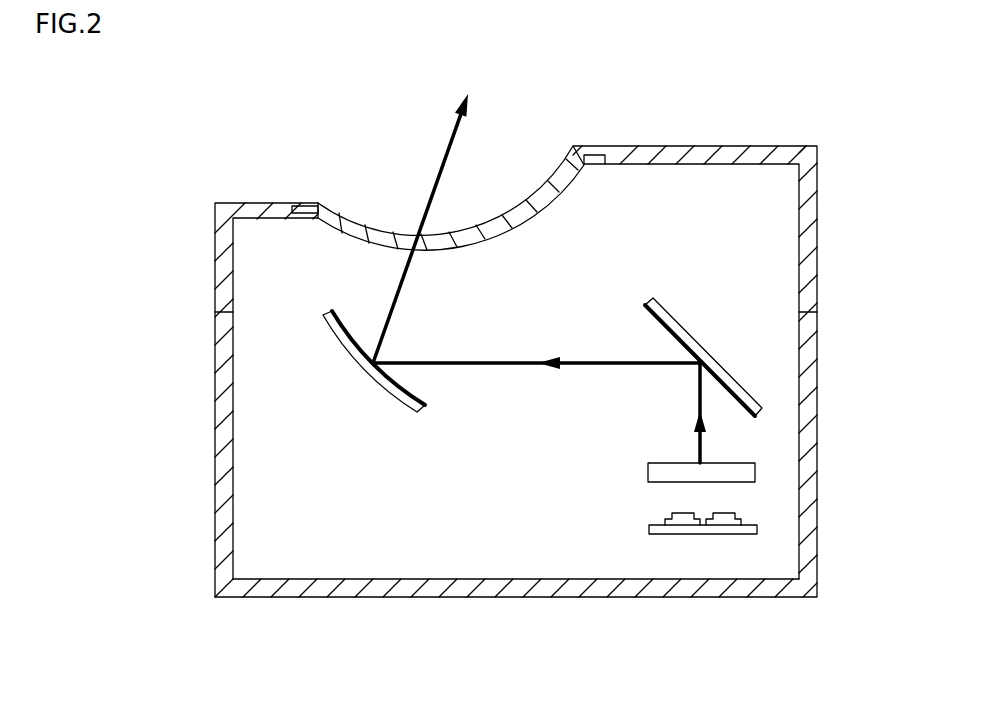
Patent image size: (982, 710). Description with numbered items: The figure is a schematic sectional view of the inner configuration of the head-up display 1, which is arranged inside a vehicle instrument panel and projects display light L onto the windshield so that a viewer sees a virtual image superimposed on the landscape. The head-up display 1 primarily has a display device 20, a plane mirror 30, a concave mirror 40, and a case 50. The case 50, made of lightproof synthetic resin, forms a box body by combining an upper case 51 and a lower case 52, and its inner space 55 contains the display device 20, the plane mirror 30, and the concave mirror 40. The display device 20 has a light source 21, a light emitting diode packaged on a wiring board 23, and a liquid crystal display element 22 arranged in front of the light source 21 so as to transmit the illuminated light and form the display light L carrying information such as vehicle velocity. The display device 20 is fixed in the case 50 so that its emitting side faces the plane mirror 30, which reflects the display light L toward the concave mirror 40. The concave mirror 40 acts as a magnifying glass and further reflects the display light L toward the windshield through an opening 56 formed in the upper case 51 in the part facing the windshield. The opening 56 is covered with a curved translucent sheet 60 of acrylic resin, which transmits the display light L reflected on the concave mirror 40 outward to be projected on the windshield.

The head-up display 1 is at (262, 123).
The display device 20 is at (627, 509).
The light source 21 is at (737, 515).
The liquid crystal display element 22 is at (757, 470).
The wiring board 23 is at (710, 535).
The plane mirror 30 is at (658, 303).
The concave mirror 40 is at (378, 386).
The case 50 is at (500, 608).
The upper case 51 is at (808, 252).
The lower case 52 is at (808, 334).
The inner space 55 is at (327, 568).
The opening 56 is at (605, 145).
The translucent sheet 60 is at (333, 206).
The display light L is at (463, 356).